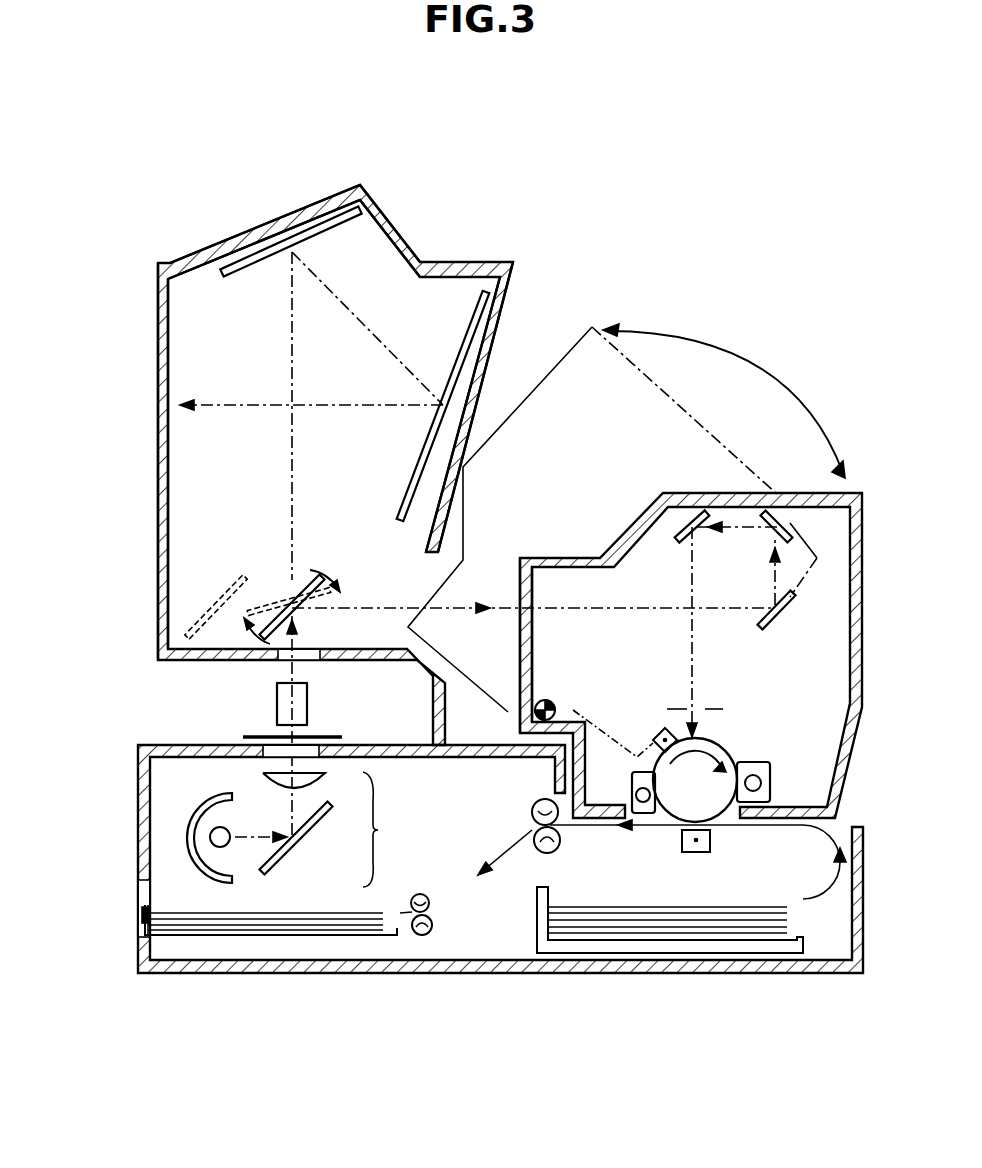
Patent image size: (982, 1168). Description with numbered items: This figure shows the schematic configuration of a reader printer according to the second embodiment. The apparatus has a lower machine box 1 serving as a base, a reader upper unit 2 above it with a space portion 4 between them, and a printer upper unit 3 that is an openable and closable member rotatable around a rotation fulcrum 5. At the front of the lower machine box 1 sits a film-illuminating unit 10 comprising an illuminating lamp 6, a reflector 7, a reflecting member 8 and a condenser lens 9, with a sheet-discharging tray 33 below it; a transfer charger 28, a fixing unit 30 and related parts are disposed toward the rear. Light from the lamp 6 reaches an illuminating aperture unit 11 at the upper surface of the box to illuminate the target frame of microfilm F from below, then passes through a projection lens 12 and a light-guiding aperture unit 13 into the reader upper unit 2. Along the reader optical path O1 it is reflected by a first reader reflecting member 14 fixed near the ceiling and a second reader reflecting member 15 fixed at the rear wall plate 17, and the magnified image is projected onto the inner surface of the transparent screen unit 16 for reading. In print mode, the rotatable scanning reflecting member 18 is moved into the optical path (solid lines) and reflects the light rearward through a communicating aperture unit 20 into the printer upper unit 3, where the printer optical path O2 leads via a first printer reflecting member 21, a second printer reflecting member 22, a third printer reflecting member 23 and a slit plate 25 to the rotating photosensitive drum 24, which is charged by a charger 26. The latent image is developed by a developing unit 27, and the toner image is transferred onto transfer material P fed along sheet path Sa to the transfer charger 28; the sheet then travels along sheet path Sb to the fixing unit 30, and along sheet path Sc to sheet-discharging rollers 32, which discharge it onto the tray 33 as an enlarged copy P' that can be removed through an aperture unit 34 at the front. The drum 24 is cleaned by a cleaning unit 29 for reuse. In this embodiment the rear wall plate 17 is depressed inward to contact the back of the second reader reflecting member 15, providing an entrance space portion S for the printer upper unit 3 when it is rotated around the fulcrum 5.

The lower machine box 1 is at (140, 775).
The upper unit of reader unit 2 is at (305, 210).
The upper unit of printer unit 3 is at (735, 448).
The space portion 4 is at (160, 688).
The rotation fulcrum 5 is at (555, 703).
The illuminating lamp 6 is at (226, 829).
The reflector 7 is at (200, 808).
The reflecting member 8 is at (317, 833).
The condenser lens 9 is at (317, 783).
The film-illuminating unit 10 is at (427, 847).
The illuminating aperture unit 11 is at (347, 743).
The projection lens 12 is at (307, 703).
The light-guiding aperture unit 13 is at (277, 660).
The first reader reflecting member 14 is at (258, 270).
The second reader reflecting member 15 is at (478, 316).
The transparent screen unit 16 is at (158, 340).
The rear wall plate 17 is at (492, 322).
The scanning reflecting member 18 is at (218, 592).
The communicating aperture unit 20 is at (530, 598).
The first printer reflecting member 21 is at (781, 615).
The second printer reflecting member 22 is at (790, 513).
The third printer reflecting member 23 is at (667, 544).
The photosensitive drum 24 is at (725, 752).
The slit plate 25 is at (718, 708).
The charger 26 is at (657, 737).
The developing unit 27 is at (773, 780).
The transfer charger 28 is at (712, 845).
The cleaning unit 29 is at (632, 780).
The fixing unit 30 is at (550, 855).
The sheet-discharging rollers 32 is at (425, 897).
The sheet-discharging tray 33 is at (273, 937).
The aperture unit 34 is at (143, 897).
The entrance space portion S is at (540, 435).
The microfilm F is at (263, 735).
The transfer material P is at (670, 913).
The enlarged copy P' is at (265, 899).
The sheet path Sa is at (812, 833).
The sheet path Sb is at (658, 830).
The sheet path Sc is at (512, 848).
The reader optical path O1 is at (292, 485).
The printer optical path O2 is at (582, 608).